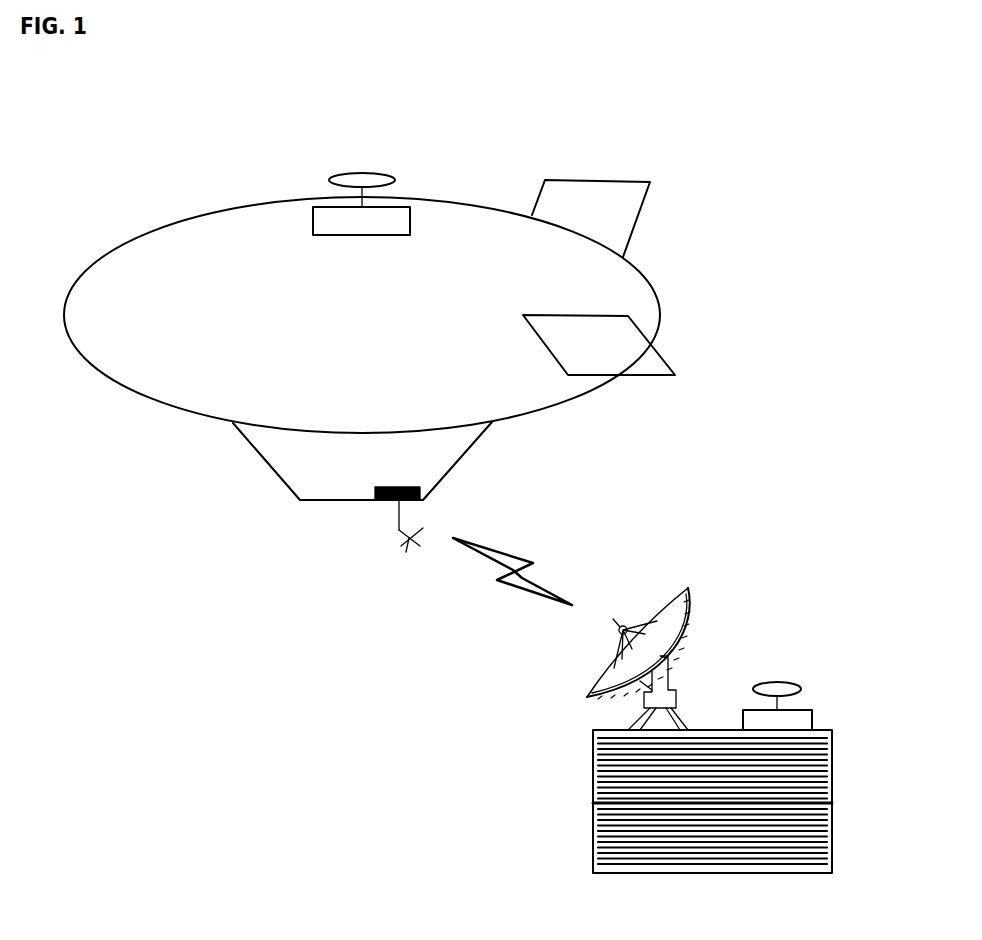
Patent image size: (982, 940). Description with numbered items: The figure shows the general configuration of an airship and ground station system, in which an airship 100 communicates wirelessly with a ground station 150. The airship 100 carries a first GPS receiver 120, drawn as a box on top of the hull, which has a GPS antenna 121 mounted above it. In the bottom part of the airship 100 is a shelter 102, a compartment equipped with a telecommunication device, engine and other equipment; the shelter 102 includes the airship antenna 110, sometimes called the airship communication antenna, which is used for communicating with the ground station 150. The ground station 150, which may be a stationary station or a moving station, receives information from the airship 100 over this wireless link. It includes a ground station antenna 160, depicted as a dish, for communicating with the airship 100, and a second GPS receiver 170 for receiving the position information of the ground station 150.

The airship 100 is at (165, 182).
The shelter 102 is at (287, 458).
The airship antenna 110 is at (397, 532).
The first GPS receiver 120 is at (400, 202).
The GPS antenna 121 is at (357, 178).
The ground station 150 is at (560, 740).
The ground station antenna 160 is at (690, 590).
The second GPS receiver 170 is at (826, 710).